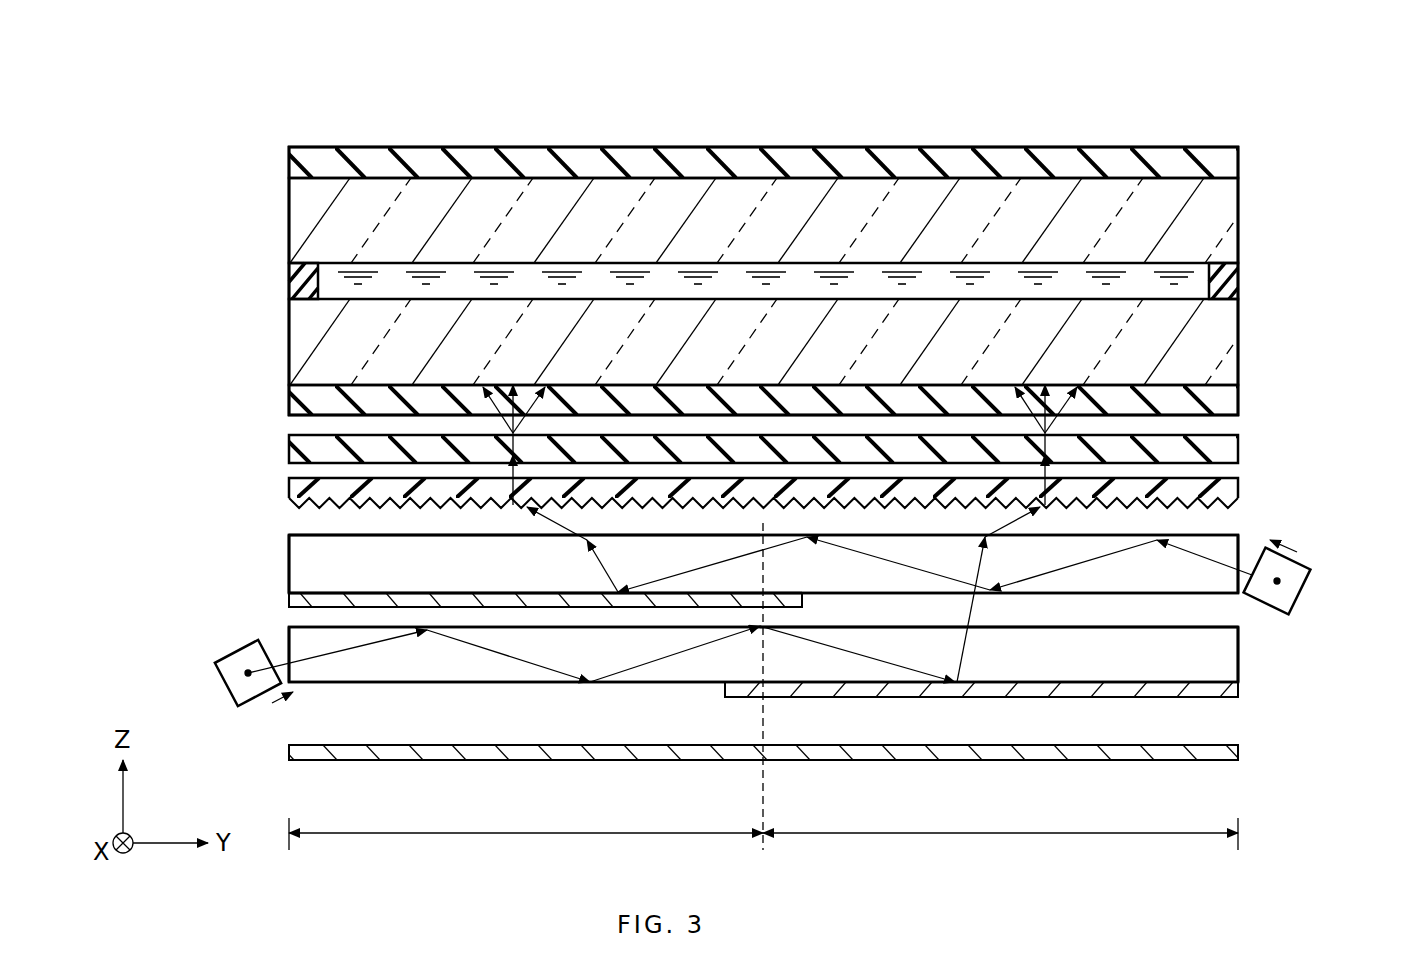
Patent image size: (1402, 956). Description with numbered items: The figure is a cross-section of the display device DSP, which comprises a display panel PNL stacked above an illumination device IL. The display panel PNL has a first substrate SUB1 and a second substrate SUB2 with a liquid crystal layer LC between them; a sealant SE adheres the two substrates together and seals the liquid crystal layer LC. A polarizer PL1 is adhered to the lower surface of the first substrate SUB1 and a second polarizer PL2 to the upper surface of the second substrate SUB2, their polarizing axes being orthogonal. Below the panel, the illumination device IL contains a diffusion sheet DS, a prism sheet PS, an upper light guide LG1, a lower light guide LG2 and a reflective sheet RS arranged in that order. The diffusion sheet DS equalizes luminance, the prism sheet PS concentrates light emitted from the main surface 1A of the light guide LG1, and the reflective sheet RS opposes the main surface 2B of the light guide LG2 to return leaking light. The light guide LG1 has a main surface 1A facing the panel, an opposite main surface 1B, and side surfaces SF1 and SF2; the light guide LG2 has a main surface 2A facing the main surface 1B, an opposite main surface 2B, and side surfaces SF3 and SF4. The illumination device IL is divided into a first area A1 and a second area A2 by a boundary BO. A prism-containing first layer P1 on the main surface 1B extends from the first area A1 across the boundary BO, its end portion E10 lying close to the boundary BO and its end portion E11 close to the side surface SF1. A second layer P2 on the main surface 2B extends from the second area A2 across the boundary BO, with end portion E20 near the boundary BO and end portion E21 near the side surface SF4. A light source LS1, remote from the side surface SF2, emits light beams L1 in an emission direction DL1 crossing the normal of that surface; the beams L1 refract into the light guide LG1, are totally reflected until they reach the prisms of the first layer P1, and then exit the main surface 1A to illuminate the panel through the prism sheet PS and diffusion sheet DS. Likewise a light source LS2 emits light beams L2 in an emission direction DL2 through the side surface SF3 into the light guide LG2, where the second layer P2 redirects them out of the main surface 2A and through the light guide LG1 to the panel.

The display device DSP is at (198, 122).
The display panel PNL is at (228, 270).
The polarizer PL2 is at (1234, 158).
The second substrate SUB2 is at (1232, 216).
The liquid crystal layer LC is at (1145, 280).
The sealant SE is at (296, 289).
The first substrate SUB1 is at (1232, 336).
The polarizer PL1 is at (1232, 396).
The diffusion sheet DS is at (1236, 450).
The prism sheet PS is at (1238, 486).
The illumination device IL is at (207, 578).
The light guide LG1 is at (1173, 585).
The side surface SF1 is at (285, 553).
The side surface SF2 is at (1245, 538).
The main surface 1A is at (334, 532).
The main surface 1B is at (404, 600).
The end portion E11 is at (285, 595).
The end portion E10 is at (806, 602).
The first layer P1 is at (288, 602).
The light source LS1 is at (1307, 587).
The emission direction DL1 is at (1311, 550).
The light beam L1 is at (867, 488).
The light guide LG2 is at (1233, 643).
The side surface SF3 is at (285, 630).
The side surface SF4 is at (1244, 662).
The main surface 2A is at (1029, 618).
The main surface 2B is at (1094, 689).
The end portion E21 is at (1244, 683).
The end portion E20 is at (716, 692).
The second layer P2 is at (1241, 690).
The light source LS2 is at (223, 682).
The emission direction DL2 is at (280, 715).
The light beam L2 is at (662, 533).
The reflective sheet RS is at (1238, 752).
The boundary BO is at (767, 703).
The first area A1 is at (526, 843).
The second area A2 is at (1000, 843).